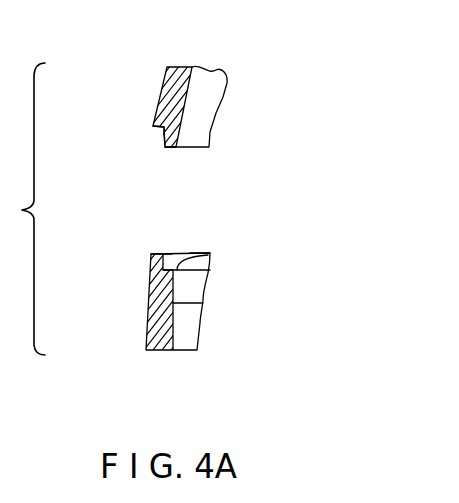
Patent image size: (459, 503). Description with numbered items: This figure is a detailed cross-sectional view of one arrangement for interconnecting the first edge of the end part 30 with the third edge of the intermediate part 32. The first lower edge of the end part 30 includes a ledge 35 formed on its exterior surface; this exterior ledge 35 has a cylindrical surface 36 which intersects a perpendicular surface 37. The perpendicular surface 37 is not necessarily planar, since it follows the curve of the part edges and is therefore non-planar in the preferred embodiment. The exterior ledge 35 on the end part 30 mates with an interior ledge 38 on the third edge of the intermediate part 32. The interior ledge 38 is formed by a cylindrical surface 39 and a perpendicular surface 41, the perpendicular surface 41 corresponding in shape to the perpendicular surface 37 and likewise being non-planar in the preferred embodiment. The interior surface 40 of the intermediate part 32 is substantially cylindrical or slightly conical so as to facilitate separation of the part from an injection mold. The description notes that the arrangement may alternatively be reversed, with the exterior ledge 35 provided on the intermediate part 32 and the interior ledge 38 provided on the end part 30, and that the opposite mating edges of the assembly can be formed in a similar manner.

The end part 30 is at (224, 99).
The intermediate part 32 is at (203, 332).
The ledge 35 is at (132, 156).
The cylindrical surface 36 is at (156, 143).
The perpendicular surface 37 is at (153, 128).
The interior ledge 38 is at (200, 237).
The cylindrical surface 39 is at (172, 253).
The interior surface 40 is at (204, 302).
The perpendicular surface 41 is at (209, 257).